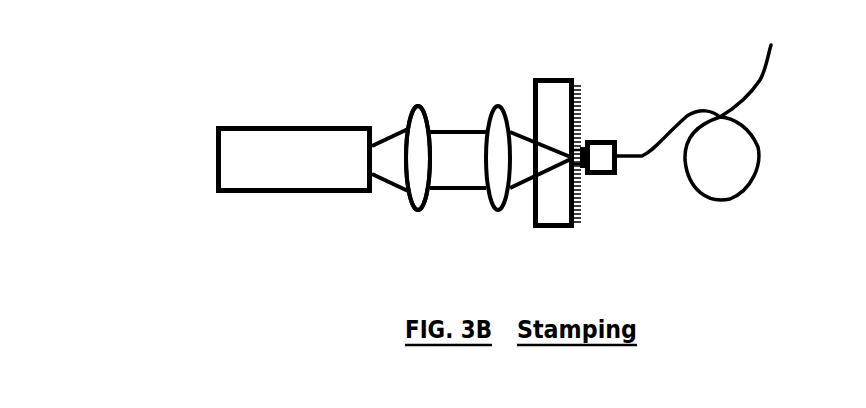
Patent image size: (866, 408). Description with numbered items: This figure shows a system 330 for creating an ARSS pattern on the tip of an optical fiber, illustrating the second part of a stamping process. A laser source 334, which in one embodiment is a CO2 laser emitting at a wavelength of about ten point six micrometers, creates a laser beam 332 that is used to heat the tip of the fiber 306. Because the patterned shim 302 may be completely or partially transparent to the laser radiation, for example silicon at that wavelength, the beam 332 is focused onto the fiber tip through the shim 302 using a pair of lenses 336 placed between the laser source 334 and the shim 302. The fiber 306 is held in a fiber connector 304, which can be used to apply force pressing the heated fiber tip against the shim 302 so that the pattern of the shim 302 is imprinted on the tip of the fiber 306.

The system 330 is at (185, 128).
The laser source 334 is at (260, 141).
The laser beam 332 is at (377, 141).
The pair of lenses 336 is at (497, 104).
The shim 302 is at (547, 92).
The fiber connector 304 is at (602, 180).
The fiber 306 is at (762, 75).